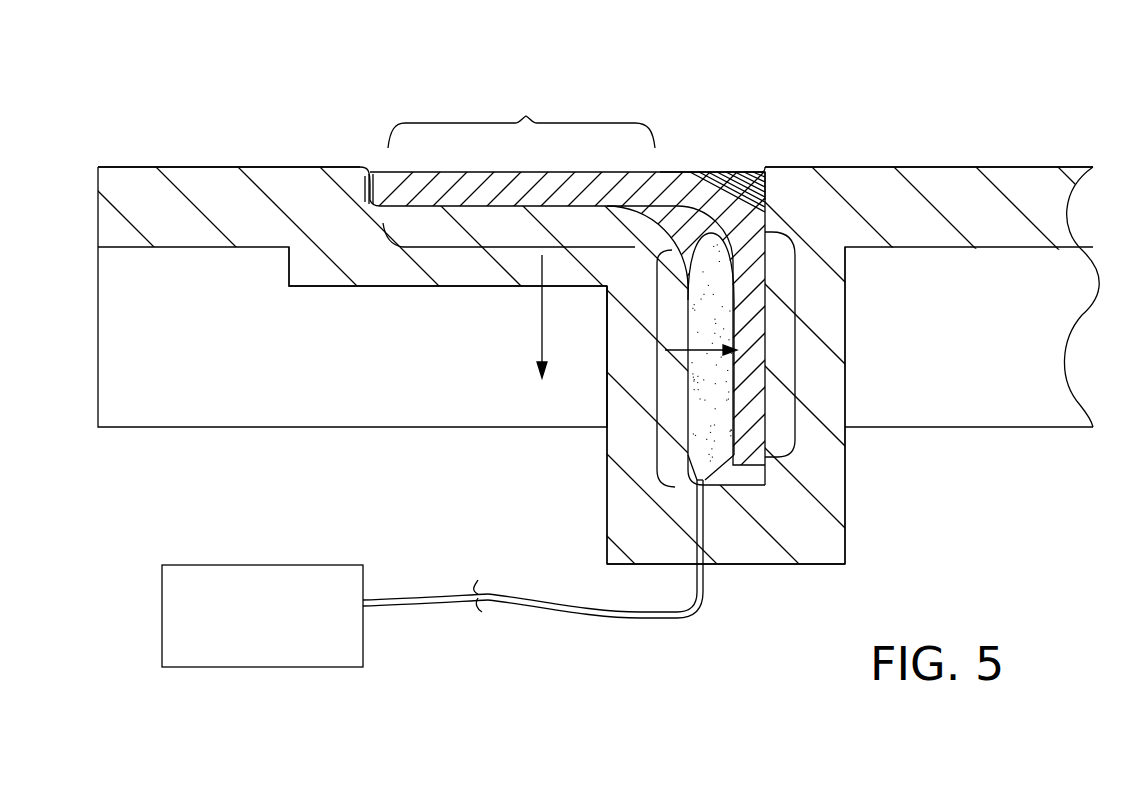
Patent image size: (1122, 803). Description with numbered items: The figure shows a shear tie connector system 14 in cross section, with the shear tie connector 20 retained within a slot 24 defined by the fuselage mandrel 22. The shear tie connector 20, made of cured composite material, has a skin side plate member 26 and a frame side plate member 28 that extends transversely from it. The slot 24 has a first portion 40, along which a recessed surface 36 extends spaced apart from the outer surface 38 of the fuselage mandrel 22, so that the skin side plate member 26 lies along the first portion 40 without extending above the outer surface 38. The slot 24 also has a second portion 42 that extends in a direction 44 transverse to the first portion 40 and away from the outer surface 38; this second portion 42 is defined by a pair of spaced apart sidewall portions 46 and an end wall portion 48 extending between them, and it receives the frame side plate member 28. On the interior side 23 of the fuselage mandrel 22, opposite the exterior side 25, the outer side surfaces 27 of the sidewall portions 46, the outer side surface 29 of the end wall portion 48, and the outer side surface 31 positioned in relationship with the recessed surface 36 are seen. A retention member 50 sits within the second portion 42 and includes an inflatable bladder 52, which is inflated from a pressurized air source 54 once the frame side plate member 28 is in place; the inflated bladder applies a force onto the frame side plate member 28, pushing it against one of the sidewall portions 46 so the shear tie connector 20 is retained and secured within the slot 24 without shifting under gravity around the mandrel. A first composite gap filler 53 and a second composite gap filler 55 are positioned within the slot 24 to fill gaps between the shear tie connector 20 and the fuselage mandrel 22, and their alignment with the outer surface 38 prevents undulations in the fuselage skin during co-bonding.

The shear tie connector system 14 is at (723, 160).
The shear tie connector 20 is at (682, 185).
The fuselage mandrel 22 is at (243, 227).
The interior side 23 is at (718, 645).
The slot 24 is at (757, 195).
The exterior side 25 is at (408, 88).
The skin side plate member 26 is at (526, 116).
The outer side surfaces 27 is at (845, 478).
The frame side plate member 28 is at (796, 370).
The outer side surface 29 is at (723, 565).
The outer side surface 31 is at (387, 288).
The recessed surface 36 is at (510, 206).
The outer surface 38 is at (262, 167).
The first portion 40 is at (520, 247).
The second portion 42 is at (652, 348).
The direction 44 is at (540, 315).
The spaced apart sidewall portions 46 is at (637, 378).
The end wall portion 48 is at (722, 502).
The retention member 50 is at (737, 490).
The inflatable bladder 52 is at (722, 455).
The first composite gap filler 53 is at (718, 172).
The pressurized air source 54 is at (363, 650).
The second composite gap filler 55 is at (377, 170).